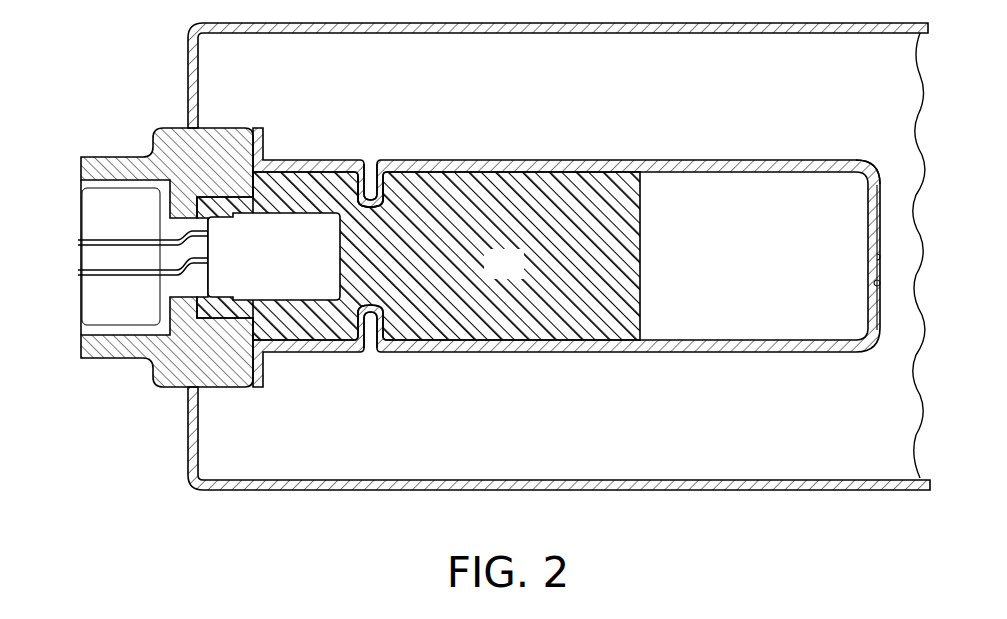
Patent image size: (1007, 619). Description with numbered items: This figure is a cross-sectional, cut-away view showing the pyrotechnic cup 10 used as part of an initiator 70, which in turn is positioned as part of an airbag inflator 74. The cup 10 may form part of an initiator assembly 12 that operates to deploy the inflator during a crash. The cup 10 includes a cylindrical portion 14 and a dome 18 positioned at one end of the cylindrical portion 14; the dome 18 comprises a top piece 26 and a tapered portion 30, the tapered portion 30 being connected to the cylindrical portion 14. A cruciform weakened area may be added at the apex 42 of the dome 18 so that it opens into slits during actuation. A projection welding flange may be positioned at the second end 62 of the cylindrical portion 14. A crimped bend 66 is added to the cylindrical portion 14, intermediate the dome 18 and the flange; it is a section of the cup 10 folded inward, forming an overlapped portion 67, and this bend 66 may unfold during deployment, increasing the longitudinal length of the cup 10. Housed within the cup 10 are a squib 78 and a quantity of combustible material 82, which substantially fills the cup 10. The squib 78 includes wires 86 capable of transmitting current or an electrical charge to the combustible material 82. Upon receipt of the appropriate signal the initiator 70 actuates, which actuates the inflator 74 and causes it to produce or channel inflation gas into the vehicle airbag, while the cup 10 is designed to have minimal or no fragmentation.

The pyrotechnic cup 10 is at (558, 241).
The initiator assembly 12 is at (140, 263).
The cylindrical portion 14 is at (668, 168).
The dome 18 is at (886, 198).
The top piece 26 is at (877, 283).
The tapered portion 30 is at (858, 162).
The apex 42 is at (880, 257).
The second end 62 is at (586, 232).
The crimped bend 66 is at (361, 187).
The overlapped portion 67 is at (373, 162).
The initiator 70 is at (141, 145).
The airbag inflator 74 is at (559, 284).
The squib 78 is at (279, 258).
The combustible material 82 is at (517, 277).
The wires 86 is at (78, 270).